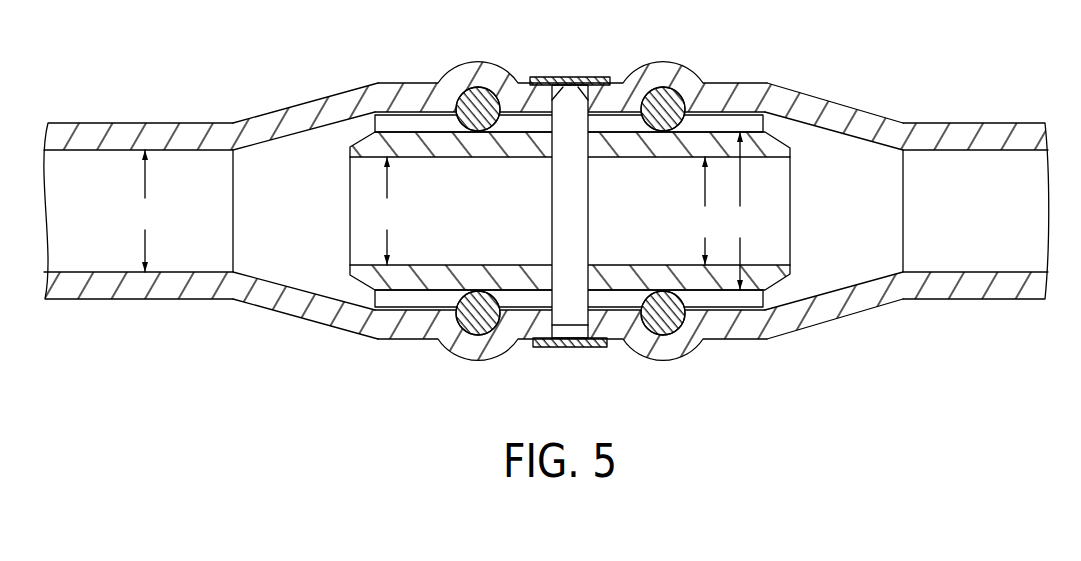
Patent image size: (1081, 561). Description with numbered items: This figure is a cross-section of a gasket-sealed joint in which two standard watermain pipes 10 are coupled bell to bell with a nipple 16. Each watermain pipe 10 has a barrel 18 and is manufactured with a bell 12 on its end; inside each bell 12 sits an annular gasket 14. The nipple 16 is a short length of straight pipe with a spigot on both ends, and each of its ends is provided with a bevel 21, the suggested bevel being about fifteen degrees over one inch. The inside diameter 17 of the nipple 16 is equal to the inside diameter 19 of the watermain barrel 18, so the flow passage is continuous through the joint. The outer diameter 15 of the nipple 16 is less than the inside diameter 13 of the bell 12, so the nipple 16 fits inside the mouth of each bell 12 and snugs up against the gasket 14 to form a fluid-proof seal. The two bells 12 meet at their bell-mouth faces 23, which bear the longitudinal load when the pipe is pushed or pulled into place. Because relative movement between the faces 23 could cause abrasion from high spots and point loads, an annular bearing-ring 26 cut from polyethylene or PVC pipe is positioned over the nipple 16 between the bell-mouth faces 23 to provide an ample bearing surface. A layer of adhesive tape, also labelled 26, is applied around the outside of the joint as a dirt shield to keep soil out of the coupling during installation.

The watermain pipe 10 is at (134, 299).
The bell 12 is at (388, 84).
The inside diameter of bell 13 is at (742, 211).
The annular gasket 14 is at (472, 89).
The outer diameter of nipple 15 is at (701, 211).
The nipple 16 is at (350, 212).
The inside diameter of nipple 17 is at (387, 211).
The watermain barrel 18 is at (175, 122).
The inside diameter of barrel 19 is at (142, 211).
The bevelled end 21 is at (353, 118).
The bell-mouth face 23 is at (574, 77).
The bearing ring 26 is at (551, 212).